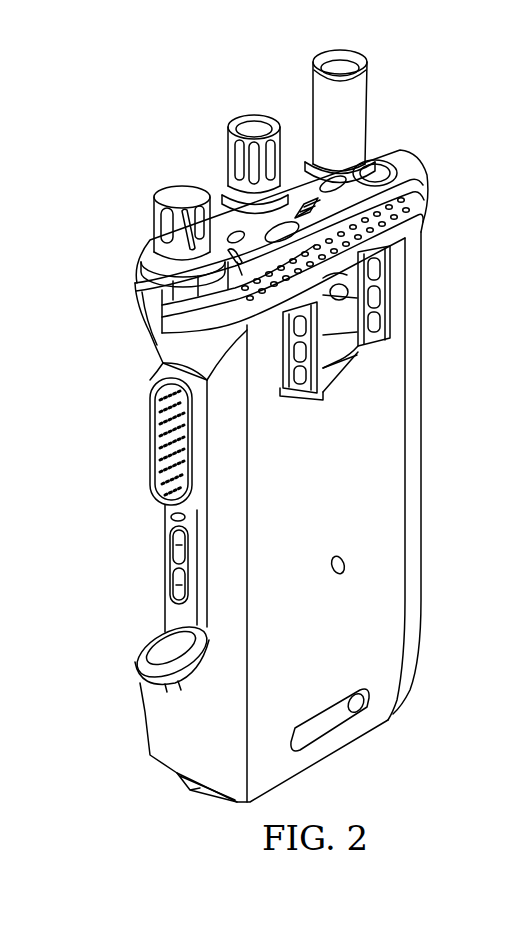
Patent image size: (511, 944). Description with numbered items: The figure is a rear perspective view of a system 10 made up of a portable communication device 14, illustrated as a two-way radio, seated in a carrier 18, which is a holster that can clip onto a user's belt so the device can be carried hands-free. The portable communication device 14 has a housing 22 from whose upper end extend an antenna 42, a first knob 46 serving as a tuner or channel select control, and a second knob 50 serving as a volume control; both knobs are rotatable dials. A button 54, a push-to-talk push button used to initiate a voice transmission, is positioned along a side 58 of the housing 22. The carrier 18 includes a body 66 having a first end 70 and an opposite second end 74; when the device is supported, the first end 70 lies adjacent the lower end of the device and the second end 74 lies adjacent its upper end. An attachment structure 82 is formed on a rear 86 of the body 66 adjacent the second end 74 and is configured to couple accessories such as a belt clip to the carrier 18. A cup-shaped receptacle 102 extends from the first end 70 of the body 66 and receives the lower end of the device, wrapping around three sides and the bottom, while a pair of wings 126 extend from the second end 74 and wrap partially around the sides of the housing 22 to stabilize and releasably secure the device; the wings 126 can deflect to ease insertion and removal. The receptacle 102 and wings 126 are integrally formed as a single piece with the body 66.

The system 10 is at (458, 99).
The portable communication device 14 is at (168, 573).
The carrier 18 is at (416, 528).
The housing 22 is at (165, 371).
The antenna 42 is at (362, 103).
The first knob 46 is at (233, 132).
The second knob 50 is at (170, 199).
The button 54 is at (154, 440).
The side 58 is at (176, 520).
The body 66 is at (416, 399).
The first end 70 is at (399, 704).
The second end 74 is at (424, 186).
The attachment structure 82 is at (357, 315).
The rear 86 is at (372, 453).
The receptacle 102 is at (155, 736).
The wings 126 is at (141, 306).